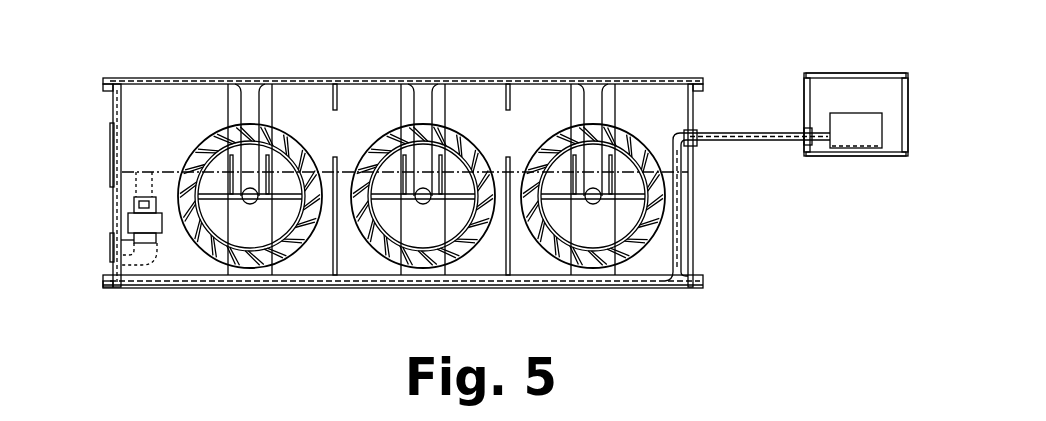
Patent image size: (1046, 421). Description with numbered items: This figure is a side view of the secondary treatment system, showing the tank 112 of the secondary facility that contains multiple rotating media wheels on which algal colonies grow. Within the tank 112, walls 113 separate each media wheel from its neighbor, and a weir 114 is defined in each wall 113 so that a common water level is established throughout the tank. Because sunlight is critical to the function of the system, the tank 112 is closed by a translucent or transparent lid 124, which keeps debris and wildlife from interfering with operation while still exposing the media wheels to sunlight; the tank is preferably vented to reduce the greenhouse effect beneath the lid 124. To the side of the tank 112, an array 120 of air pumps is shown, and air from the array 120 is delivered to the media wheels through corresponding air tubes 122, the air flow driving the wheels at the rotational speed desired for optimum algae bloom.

The tank 112 is at (693, 100).
The walls 113 is at (340, 100).
The weir 114 is at (333, 152).
The array of air pumps 120 is at (852, 73).
The air tubes 122 is at (760, 143).
The lid 124 is at (615, 78).